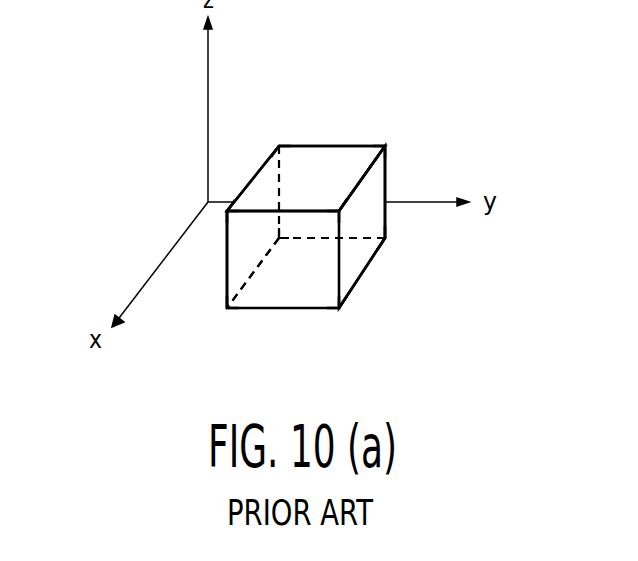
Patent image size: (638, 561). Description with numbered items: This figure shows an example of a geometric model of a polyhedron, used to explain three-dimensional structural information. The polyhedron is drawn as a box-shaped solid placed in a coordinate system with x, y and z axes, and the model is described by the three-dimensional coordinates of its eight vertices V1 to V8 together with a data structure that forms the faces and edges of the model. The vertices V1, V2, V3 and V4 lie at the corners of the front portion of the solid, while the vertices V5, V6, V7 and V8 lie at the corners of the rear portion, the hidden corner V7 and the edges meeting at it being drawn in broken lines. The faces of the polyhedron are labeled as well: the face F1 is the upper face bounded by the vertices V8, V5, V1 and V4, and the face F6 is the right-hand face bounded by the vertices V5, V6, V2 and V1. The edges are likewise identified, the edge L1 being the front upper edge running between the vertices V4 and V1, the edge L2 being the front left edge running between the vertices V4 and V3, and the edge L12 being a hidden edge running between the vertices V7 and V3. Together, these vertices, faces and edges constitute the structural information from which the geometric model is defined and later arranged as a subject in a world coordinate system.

The vertex V1 is at (353, 216).
The vertex V2 is at (348, 322).
The vertex V3 is at (217, 322).
The vertex V4 is at (217, 229).
The vertex V5 is at (388, 134).
The vertex V6 is at (400, 244).
The vertex V7 is at (294, 252).
The vertex V8 is at (276, 133).
The face F1 (top face of cube) F1 is at (306, 178).
The face F6 (right face of cube) F6 is at (373, 183).
The edge L1 (front top edge) L1 is at (302, 212).
The edge L2 (front left edge) L2 is at (211, 259).
The edge L12 (hidden edge) L12 is at (252, 280).